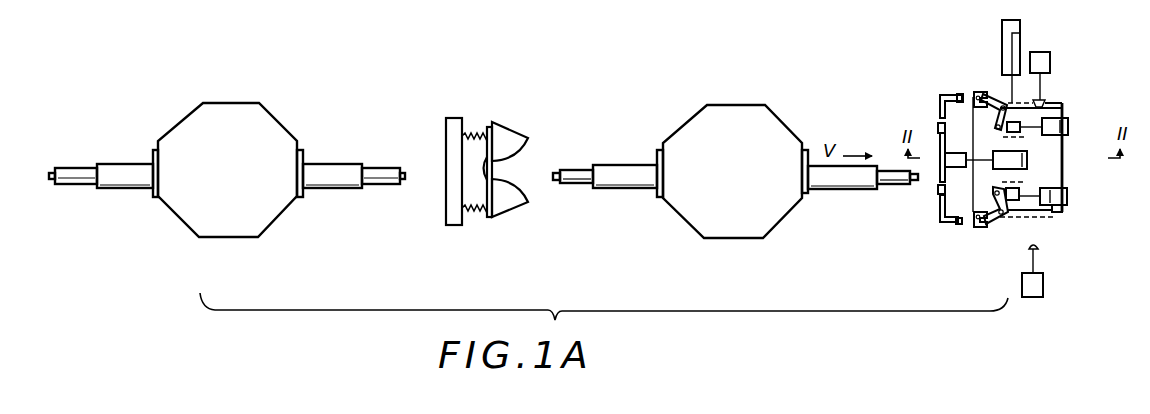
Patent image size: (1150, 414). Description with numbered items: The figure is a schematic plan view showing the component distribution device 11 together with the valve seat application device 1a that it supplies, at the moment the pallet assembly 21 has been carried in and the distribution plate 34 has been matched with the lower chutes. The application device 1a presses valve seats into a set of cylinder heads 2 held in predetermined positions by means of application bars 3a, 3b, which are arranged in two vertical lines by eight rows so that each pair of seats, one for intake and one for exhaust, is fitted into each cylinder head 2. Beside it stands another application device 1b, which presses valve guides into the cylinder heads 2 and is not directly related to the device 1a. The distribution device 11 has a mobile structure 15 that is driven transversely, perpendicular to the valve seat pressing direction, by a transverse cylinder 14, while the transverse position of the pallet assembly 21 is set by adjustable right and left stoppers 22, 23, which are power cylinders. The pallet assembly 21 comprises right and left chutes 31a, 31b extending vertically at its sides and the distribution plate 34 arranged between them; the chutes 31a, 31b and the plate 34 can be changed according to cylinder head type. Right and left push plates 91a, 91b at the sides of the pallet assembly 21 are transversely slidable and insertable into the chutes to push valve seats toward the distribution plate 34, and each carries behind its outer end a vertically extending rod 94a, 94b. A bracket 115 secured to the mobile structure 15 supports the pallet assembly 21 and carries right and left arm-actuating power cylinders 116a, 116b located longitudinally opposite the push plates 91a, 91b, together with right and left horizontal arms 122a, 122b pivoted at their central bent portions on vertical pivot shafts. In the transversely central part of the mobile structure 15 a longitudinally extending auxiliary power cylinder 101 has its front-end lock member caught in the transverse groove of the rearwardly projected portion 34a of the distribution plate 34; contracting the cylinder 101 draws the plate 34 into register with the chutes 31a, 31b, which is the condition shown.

The valve seat application device 1a is at (735, 148).
The valve guide application device 1b is at (253, 101).
The cylinder head 2 is at (470, 143).
The application bar 3a is at (577, 184).
The application bar 3b is at (897, 188).
The component distribution device 11 is at (965, 54).
The transverse cylinder 14 is at (1020, 27).
The mobile structure 15 is at (1066, 180).
The pallet assembly 21 is at (929, 167).
The right stopper 22 is at (1050, 63).
The left stopper 23 is at (1045, 284).
The right chute 31a is at (938, 127).
The left chute 31b is at (937, 190).
The distribution plate 34 is at (937, 178).
The rearwardly projected portion 34a is at (953, 157).
The right push plate 91a is at (940, 102).
The left push plate 91b is at (952, 225).
The vertically extending rod 94a is at (960, 96).
The vertically extending rod 94b is at (958, 225).
The auxiliary power cylinder 101 is at (1023, 145).
The bracket 115 is at (1055, 102).
The right arm-actuating power cylinder 116a is at (1062, 110).
The left arm-actuating power cylinder 116b is at (1058, 221).
The right horizontal arm 122a is at (987, 98).
The left horizontal arm 122b is at (990, 229).